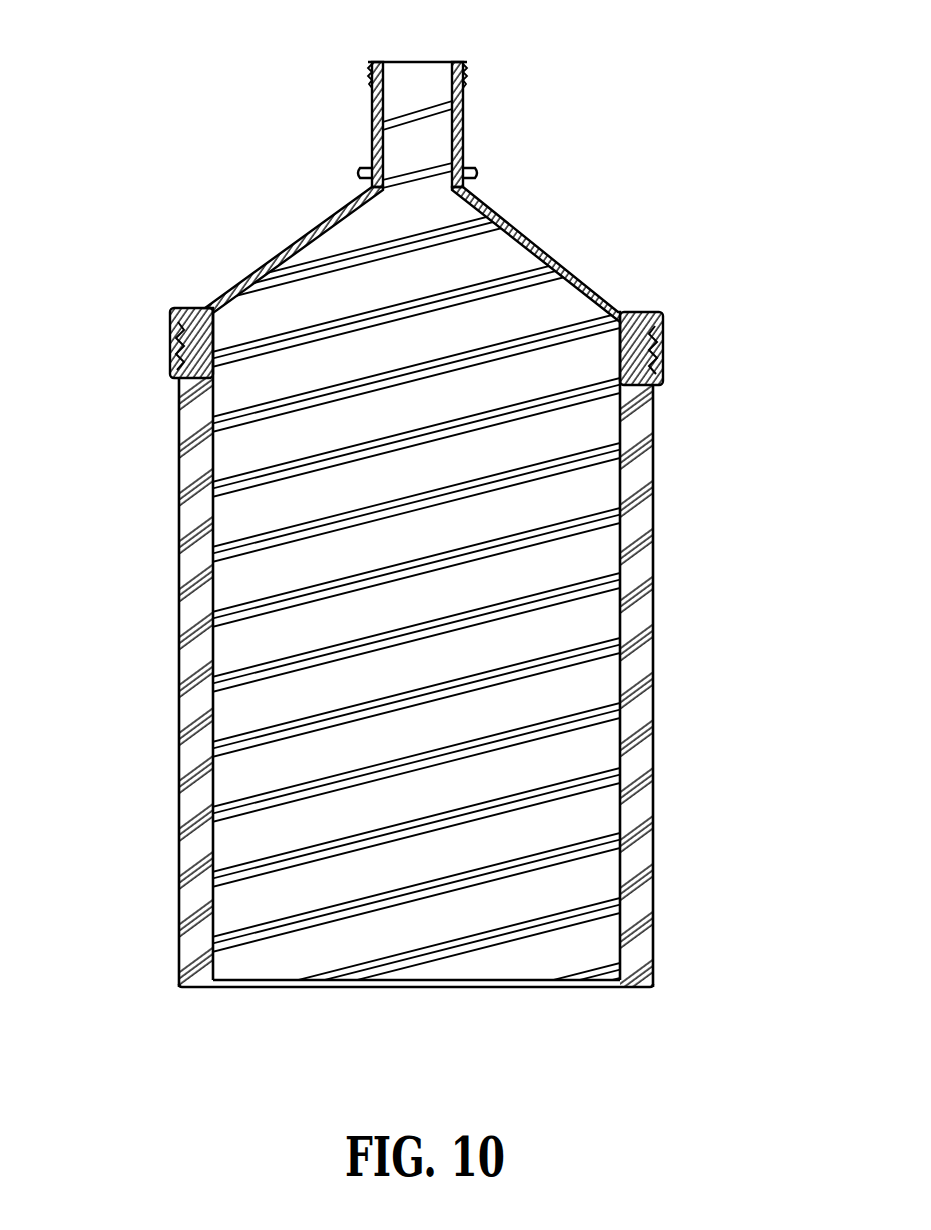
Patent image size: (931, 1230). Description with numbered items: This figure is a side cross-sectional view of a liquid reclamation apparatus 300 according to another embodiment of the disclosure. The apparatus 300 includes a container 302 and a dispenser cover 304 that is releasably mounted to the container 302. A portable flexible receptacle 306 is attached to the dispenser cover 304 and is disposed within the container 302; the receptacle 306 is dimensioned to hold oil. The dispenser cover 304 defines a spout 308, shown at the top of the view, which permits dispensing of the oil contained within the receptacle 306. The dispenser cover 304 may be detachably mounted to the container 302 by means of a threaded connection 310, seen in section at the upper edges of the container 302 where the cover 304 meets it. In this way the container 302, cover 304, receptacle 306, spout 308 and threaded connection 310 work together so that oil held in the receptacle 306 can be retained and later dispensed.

The liquid reclamation apparatus 300 is at (398, 574).
The container 302 is at (190, 843).
The dispenser cover 304 is at (572, 269).
The portable flexible receptacle 306 is at (593, 594).
The spout 308 is at (457, 120).
The threaded connection 310 is at (665, 318).